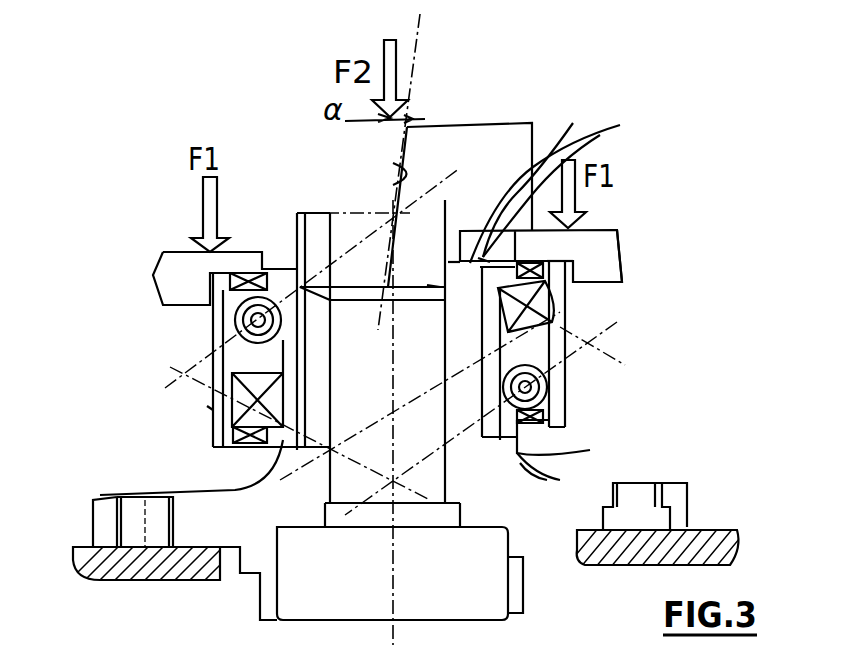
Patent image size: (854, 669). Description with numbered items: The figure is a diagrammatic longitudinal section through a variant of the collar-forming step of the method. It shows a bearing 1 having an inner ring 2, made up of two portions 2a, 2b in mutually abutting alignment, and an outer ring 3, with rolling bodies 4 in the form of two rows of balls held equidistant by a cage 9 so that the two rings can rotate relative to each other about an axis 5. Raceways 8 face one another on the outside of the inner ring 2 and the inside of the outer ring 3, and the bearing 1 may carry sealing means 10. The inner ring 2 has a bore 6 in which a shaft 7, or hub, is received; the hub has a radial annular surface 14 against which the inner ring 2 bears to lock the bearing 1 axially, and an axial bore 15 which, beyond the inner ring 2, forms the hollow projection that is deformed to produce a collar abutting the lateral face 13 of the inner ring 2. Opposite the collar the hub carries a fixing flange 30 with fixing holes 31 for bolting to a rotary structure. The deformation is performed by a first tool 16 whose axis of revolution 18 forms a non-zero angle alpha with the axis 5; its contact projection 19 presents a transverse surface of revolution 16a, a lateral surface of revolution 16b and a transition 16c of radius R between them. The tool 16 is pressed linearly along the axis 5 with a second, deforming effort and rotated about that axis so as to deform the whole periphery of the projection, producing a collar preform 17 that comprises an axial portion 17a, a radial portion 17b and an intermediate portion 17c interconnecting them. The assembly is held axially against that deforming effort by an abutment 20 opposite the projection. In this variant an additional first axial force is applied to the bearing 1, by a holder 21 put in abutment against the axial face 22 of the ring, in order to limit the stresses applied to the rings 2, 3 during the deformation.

The bearing 1 is at (198, 412).
The inner ring 2 is at (300, 450).
The inner ring portion 2a is at (290, 262).
The inner ring portion 2b is at (247, 460).
The outer ring 3 is at (236, 320).
The rolling bodies 4 is at (213, 330).
The axis 5 is at (393, 597).
The bore 6 is at (265, 470).
The shaft 7 is at (547, 480).
The raceways 8 is at (232, 400).
The cage 9 is at (545, 290).
The sealing means 10 is at (517, 433).
The lateral face 13 is at (393, 176).
The radial annular surface 14 is at (590, 450).
The axial bore 15 is at (423, 482).
The first tool 16 is at (462, 260).
The transverse surface of revolution 16a is at (448, 262).
The lateral surface of revolution 16b is at (543, 98).
The transition 16c is at (478, 258).
The collar preform 17 is at (580, 237).
The axial portion 17a is at (573, 247).
The radial portion 17b is at (620, 125).
The intermediate portion 17c is at (573, 123).
The axis of revolution 18 is at (420, 20).
The contact projection 19 is at (427, 285).
The abutment 20 is at (710, 533).
The holder 21 is at (600, 286).
The axial face 22 is at (213, 303).
The fixing flange 30 is at (217, 523).
The fixing holes 31 is at (540, 500).